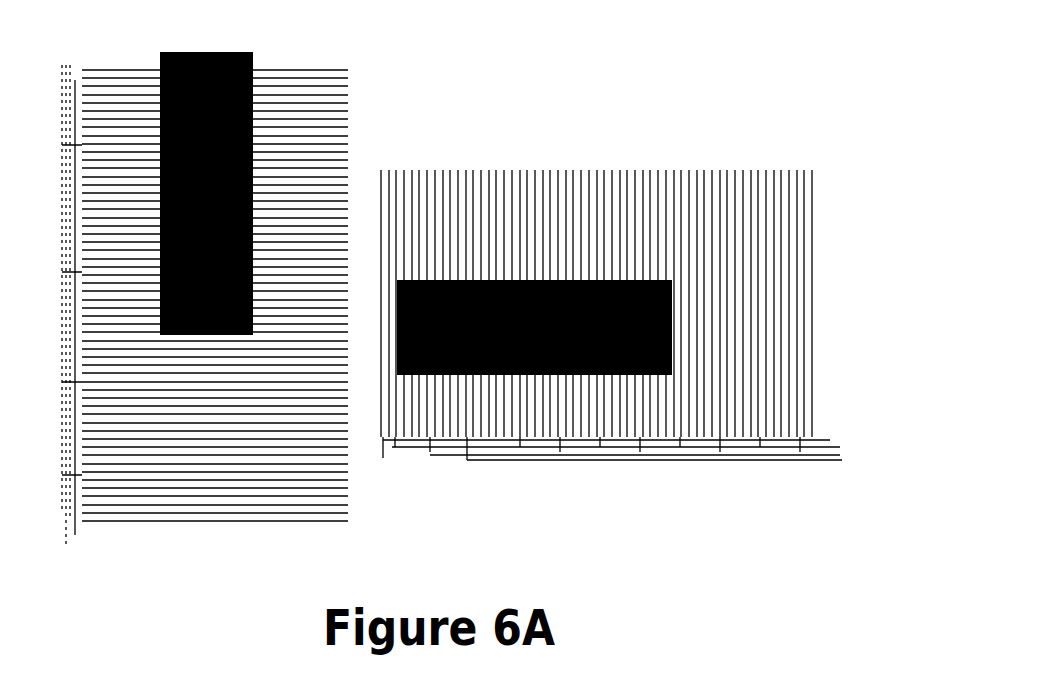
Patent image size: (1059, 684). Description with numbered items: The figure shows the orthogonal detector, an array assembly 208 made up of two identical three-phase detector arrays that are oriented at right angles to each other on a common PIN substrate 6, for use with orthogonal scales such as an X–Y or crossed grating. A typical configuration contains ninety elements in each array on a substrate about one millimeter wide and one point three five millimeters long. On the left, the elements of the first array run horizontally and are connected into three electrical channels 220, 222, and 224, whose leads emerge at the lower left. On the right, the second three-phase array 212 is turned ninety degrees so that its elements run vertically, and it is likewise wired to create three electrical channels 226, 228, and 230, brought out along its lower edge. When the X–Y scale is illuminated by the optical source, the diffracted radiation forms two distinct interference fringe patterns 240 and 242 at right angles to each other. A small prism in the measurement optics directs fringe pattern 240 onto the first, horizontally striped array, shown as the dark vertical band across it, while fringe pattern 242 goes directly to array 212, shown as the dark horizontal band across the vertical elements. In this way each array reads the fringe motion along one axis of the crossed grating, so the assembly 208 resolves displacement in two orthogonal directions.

The array assembly 208 is at (456, 286).
The three-phase array 212 is at (456, 295).
The interference fringe pattern 240 is at (206, 193).
The interference fringe pattern 242 is at (534, 327).
The electrical channel 220 is at (75, 535).
The electrical channel 222 is at (66, 545).
The electrical channel 224 is at (75, 535).
The electrical channel 226 is at (840, 447).
The electrical channel 228 is at (840, 455).
The electrical channel 230 is at (842, 460).
The PIN substrate 6 is at (743, 67).